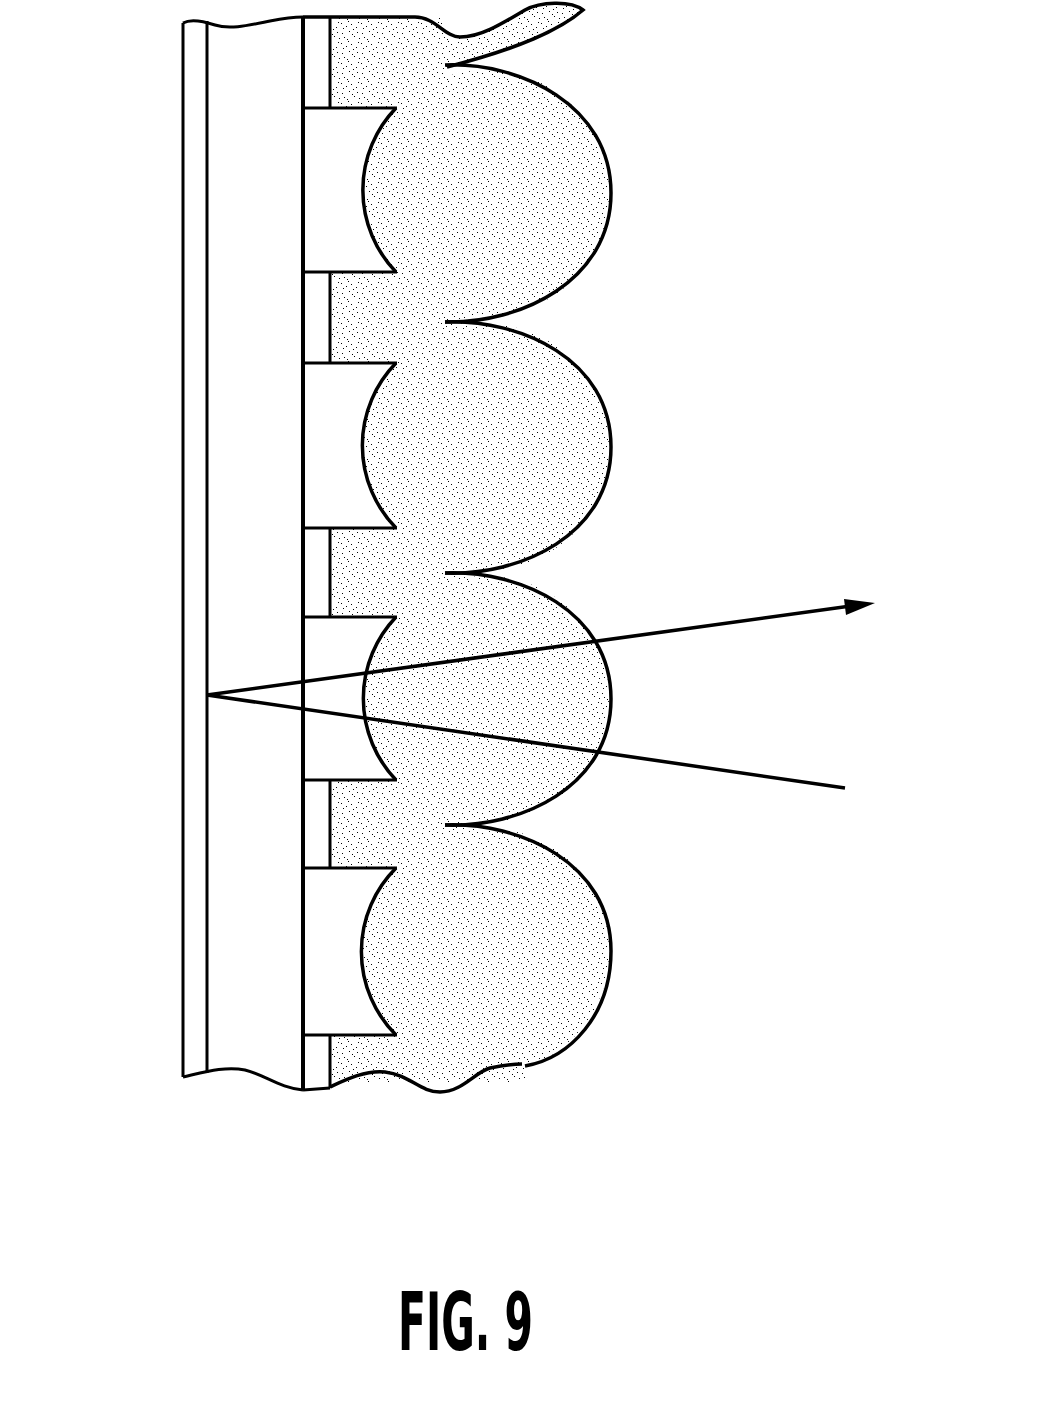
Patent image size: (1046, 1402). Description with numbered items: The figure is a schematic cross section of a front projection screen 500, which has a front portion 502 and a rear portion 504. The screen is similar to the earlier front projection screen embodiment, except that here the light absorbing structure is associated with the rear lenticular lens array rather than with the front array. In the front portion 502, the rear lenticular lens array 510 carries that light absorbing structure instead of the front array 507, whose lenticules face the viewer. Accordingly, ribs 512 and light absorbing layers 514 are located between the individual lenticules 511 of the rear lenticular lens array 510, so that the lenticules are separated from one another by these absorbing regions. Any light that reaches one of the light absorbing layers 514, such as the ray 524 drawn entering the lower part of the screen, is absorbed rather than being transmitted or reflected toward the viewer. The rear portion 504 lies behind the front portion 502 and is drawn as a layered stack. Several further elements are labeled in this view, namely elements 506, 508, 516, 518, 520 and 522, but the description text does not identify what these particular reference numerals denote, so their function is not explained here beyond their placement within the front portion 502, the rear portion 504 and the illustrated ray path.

The front projection screen 500 is at (111, 532).
The front portion 502 is at (400, 620).
The rear portion 504 is at (188, 629).
The lens element 506 is at (609, 943).
The front array 507 is at (608, 383).
The lens element 508 is at (574, 696).
The rear lenticular lens array 510 is at (340, 420).
The lenticules 511 is at (358, 473).
The ribs 512 is at (357, 533).
The light absorbing layers 514 is at (312, 828).
The substrate layer 516 is at (228, 813).
The front layer 518 is at (188, 915).
The intermediate layer 520 is at (202, 1008).
The light ray 522 is at (808, 603).
The ray 524 is at (531, 1064).